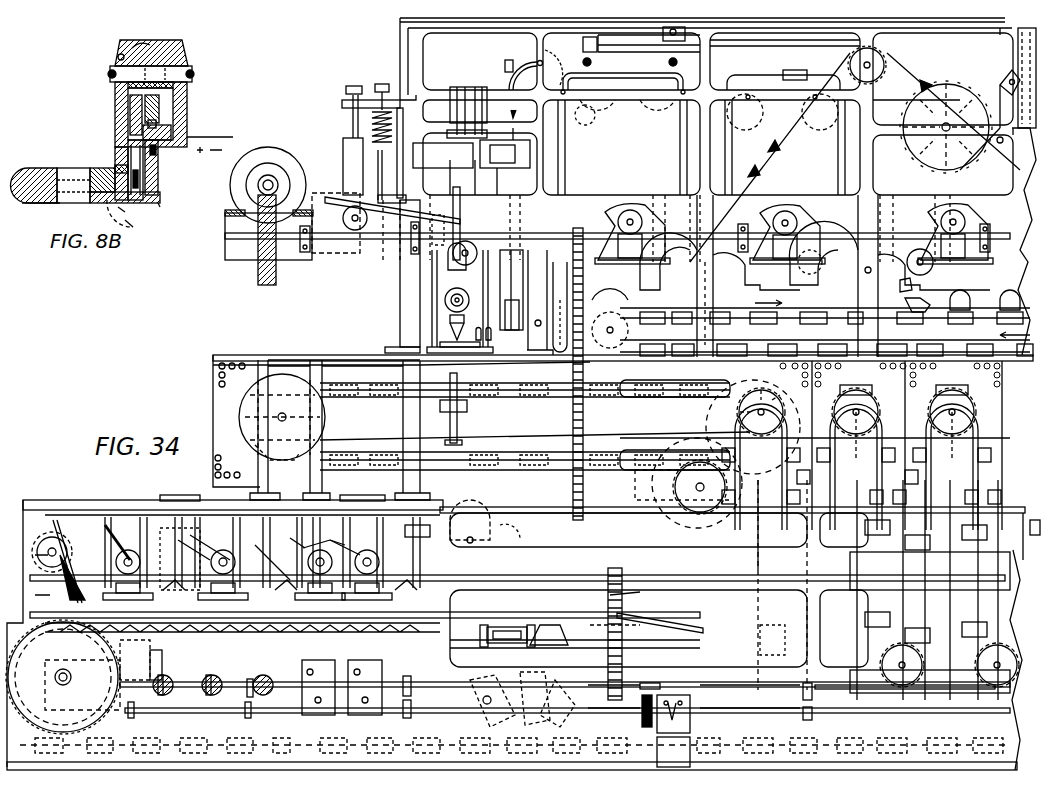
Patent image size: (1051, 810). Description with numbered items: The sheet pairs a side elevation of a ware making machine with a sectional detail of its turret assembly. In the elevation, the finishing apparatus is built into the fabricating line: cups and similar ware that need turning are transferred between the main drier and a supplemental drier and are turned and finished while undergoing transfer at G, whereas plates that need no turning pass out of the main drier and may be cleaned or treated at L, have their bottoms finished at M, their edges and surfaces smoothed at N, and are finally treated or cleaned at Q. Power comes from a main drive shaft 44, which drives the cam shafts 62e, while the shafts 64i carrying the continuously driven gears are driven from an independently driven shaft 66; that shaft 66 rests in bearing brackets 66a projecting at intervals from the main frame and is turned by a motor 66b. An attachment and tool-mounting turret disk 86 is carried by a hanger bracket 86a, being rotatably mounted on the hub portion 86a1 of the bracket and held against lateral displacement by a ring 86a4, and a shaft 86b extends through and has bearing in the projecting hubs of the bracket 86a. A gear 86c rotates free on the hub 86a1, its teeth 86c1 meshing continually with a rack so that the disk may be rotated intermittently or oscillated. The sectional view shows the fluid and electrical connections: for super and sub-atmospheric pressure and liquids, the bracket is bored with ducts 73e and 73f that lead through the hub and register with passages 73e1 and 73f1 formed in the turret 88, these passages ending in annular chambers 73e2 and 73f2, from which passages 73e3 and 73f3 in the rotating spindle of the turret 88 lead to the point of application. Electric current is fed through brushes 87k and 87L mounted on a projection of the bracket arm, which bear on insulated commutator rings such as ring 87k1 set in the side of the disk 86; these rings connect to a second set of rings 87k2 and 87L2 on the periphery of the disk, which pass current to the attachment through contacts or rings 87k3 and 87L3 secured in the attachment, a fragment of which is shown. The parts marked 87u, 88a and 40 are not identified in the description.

In FIG. 8B, the hanger bracket 86a is at (185, 52).
In FIG. 8B, the ring 86a4 is at (138, 40).
In FIG. 8B, the hub portion 86a1 is at (112, 57).
In FIG. 8B, the shaft 86b is at (192, 70).
In FIG. 8B, the passage or duct 73e is at (188, 86).
In FIG. 8B, the passage or duct 73f is at (188, 95).
In FIG. 8B, the passage 73f1 is at (115, 92).
In FIG. 8B, the gear 86c is at (180, 105).
In FIG. 8B, the gear teeth 86c1 is at (160, 116).
In FIG. 8B, the brush 87k is at (172, 130).
In FIG. 8B, the commutator ring 87k1 is at (135, 140).
In FIG. 8B, the valve seat 87u is at (145, 135).
In FIG. 8B, the spring seat 88a is at (115, 165).
In FIG. 8B, the turret 88 is at (30, 168).
In FIG. 8B, the annular groove or chamber 73e2 is at (70, 168).
In FIG. 8B, the annular groove or chamber 73f2 is at (92, 175).
In FIG. 8B, the brush 87L is at (153, 155).
In FIG. 8B, the commutator ring 87k2 is at (140, 175).
In FIG. 8B, the commutator ring 87L2 is at (158, 193).
In FIG. 8B, the passage 73f3 is at (45, 203).
In FIG. 8B, the passage 73e3 is at (107, 205).
In FIG. 8B, the contact or ring 87k3 is at (129, 212).
In FIG. 8B, the contact or ring 87L3 is at (160, 204).
In FIG. 8B, the passage 73e1 is at (145, 228).
In FIG. 34, the turning and finishing transfer point G is at (460, 298).
In FIG. 34, the final treating or cleaning station Q is at (181, 492).
In FIG. 34, the bottom finishing station M is at (369, 495).
In FIG. 34, the cleaning or treating station L is at (405, 531).
In FIG. 34, the edge and surface smoothing station N is at (292, 544).
In FIG. 34, the attachment and tool-mounting turret disk 86 is at (308, 562).
In FIG. 34, the turret gear 40 is at (928, 484).
In FIG. 34, the cam shaft 62e is at (318, 687).
In FIG. 34, the shaft 64i is at (365, 687).
In FIG. 34, the main drive shaft 44 is at (408, 686).
In FIG. 34, the independently-driven shaft 66 is at (592, 714).
In FIG. 34, the motor 66b is at (676, 711).
In FIG. 34, the bearing brackets 66a is at (800, 714).